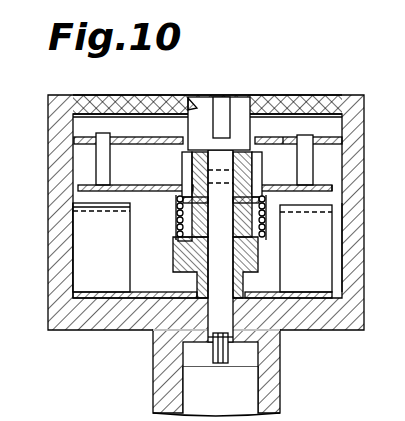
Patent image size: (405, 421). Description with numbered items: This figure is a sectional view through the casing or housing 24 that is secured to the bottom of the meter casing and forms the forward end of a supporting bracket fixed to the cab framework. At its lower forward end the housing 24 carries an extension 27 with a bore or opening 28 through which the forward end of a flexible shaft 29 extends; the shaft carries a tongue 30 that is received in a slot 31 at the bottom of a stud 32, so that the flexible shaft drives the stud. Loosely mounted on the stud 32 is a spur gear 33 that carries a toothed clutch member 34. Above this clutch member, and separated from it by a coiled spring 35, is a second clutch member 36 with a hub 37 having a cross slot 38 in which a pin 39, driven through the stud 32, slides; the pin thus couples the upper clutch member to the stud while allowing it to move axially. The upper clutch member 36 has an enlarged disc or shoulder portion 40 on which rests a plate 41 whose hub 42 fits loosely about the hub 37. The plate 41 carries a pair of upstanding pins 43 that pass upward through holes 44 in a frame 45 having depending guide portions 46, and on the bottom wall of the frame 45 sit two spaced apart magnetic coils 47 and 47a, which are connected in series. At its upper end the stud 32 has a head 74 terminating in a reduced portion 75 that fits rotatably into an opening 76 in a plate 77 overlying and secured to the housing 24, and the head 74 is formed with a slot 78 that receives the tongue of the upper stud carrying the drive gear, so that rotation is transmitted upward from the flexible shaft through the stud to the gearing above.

The casing or housing 24 is at (362, 288).
The extension 27 is at (279, 388).
The bore or opening 28 is at (248, 357).
The flexible shaft 29 is at (237, 402).
The tongue 30 is at (220, 350).
The slot 31 is at (218, 338).
The stud 32 is at (222, 267).
The spur gear 33 is at (175, 258).
The toothed clutch member 34 is at (180, 240).
The coiled spring 35 is at (266, 229).
The second clutch member 36 is at (334, 190).
The hub 37 is at (176, 186).
The cross slot 38 is at (187, 162).
The pin 39 is at (240, 173).
The enlarged disc or shoulder portion 40 is at (176, 193).
The plate 41 is at (120, 188).
The hub 42 is at (318, 160).
The upstanding pins 43 is at (96, 155).
The holes 44 is at (115, 137).
The frame 45 is at (284, 141).
The depending guide portions 46 is at (83, 195).
The magnetic coil 47 is at (331, 257).
The magnetic coil 47a is at (83, 257).
The head 74 is at (257, 125).
The reduced portion 75 is at (235, 113).
The opening 76 is at (197, 103).
The plate 77 is at (95, 98).
The slot 78 is at (218, 110).